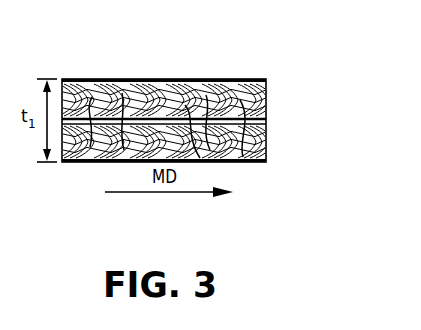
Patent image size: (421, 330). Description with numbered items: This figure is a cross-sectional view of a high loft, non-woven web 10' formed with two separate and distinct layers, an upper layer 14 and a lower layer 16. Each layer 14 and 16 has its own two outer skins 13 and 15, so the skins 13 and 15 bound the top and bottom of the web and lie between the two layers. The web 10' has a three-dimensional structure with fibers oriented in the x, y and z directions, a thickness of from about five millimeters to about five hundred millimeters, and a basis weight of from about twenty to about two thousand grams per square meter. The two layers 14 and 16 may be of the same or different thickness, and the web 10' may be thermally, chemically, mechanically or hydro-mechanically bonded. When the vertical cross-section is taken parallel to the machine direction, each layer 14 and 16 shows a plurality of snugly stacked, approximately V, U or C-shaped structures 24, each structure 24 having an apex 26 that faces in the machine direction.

The high loft, non-woven web 10' is at (199, 104).
The outer skin 13 is at (264, 79).
The upper layer 14 is at (266, 104).
The outer skin 15 is at (266, 120).
The lower layer 16 is at (266, 138).
The V, U or C-shaped structures 24 is at (92, 97).
The apex 26 is at (185, 105).